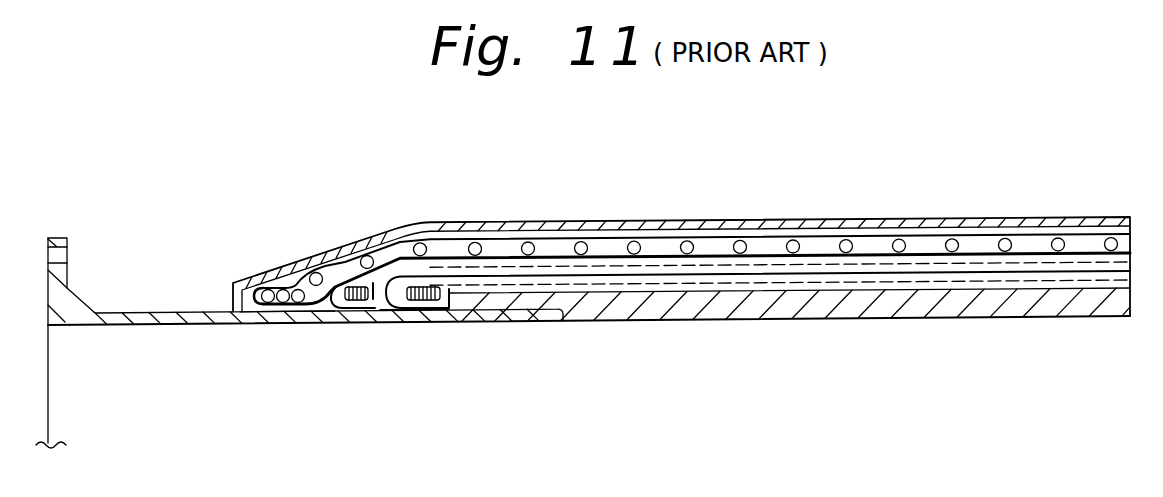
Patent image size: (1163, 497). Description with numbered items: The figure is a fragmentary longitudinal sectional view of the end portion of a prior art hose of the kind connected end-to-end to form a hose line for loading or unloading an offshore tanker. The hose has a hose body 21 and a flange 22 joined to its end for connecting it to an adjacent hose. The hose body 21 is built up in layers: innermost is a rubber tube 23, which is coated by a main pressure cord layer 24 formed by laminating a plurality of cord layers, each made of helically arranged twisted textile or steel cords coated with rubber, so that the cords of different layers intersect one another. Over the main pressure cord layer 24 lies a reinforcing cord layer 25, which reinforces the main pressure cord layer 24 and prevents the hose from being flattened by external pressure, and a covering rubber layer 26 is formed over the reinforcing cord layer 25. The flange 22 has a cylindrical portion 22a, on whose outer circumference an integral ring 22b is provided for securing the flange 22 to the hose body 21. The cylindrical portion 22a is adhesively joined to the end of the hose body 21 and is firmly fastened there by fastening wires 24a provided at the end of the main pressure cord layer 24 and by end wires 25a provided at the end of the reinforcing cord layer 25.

The hose body 21 is at (807, 219).
The flange 22 is at (101, 326).
The cylindrical portion 22a is at (305, 315).
The integral ring 22b is at (388, 309).
The rubber tube 23 is at (718, 301).
The main pressure cord layer 24 is at (872, 283).
The fastening wires 24a is at (343, 302).
The reinforcing cord layer 25 is at (1030, 255).
The end wires 25a is at (262, 305).
The covering rubber layer 26 is at (1019, 223).